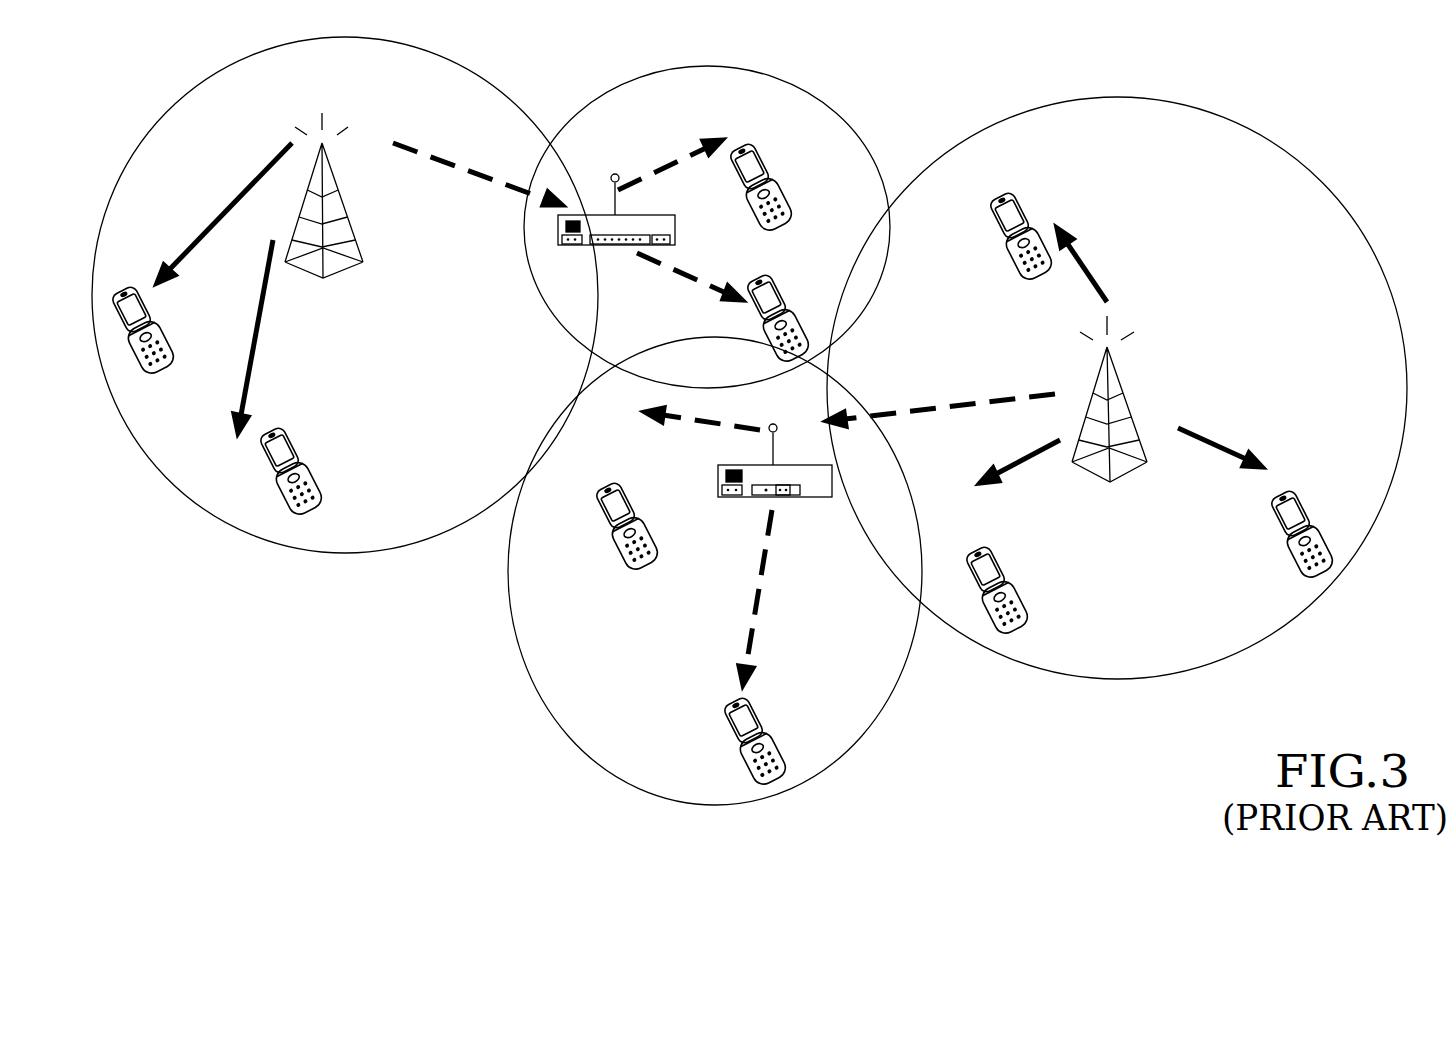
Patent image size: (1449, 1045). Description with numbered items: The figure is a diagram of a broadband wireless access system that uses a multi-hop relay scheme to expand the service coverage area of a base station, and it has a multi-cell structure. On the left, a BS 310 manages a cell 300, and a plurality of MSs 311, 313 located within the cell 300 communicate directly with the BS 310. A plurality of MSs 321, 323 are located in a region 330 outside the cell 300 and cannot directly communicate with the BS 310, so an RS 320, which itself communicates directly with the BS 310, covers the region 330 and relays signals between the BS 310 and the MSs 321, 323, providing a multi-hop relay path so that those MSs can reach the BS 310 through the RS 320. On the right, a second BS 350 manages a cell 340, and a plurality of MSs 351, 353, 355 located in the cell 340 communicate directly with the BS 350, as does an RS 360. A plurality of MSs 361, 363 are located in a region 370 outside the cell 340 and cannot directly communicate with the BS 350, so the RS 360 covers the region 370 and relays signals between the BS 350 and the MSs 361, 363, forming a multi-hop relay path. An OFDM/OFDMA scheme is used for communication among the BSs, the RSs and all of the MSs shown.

The cell 300 is at (345, 295).
The BS 310 is at (343, 202).
The MS 311 is at (125, 290).
The MS 313 is at (275, 427).
The RS 320 is at (585, 245).
The MS 321 is at (770, 277).
The MS 323 is at (753, 143).
The region 330 is at (707, 227).
The cell 340 is at (1117, 388).
The BS 350 is at (1127, 402).
The MS 351 is at (1003, 195).
The MS 353 is at (1282, 492).
The MS 355 is at (977, 547).
The RS 360 is at (727, 497).
The MS 361 is at (617, 480).
The MS 363 is at (743, 695).
The region 370 is at (715, 571).